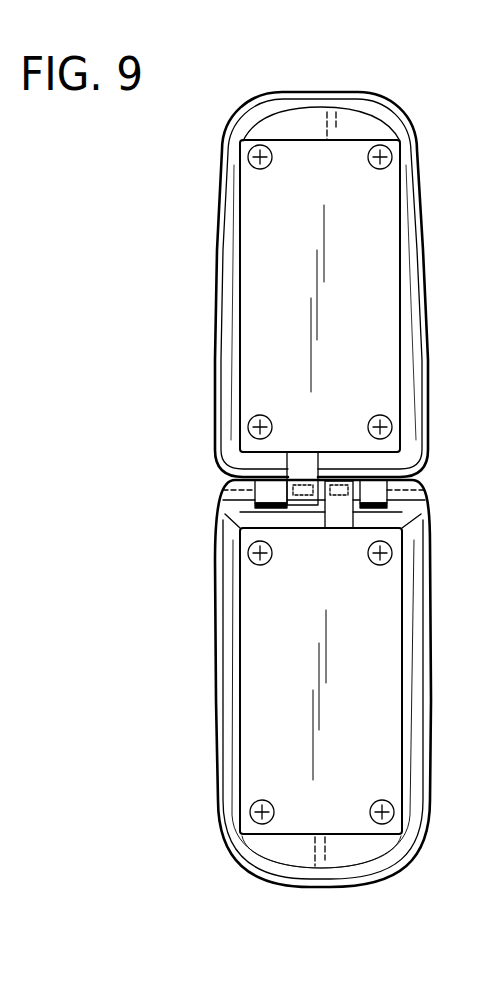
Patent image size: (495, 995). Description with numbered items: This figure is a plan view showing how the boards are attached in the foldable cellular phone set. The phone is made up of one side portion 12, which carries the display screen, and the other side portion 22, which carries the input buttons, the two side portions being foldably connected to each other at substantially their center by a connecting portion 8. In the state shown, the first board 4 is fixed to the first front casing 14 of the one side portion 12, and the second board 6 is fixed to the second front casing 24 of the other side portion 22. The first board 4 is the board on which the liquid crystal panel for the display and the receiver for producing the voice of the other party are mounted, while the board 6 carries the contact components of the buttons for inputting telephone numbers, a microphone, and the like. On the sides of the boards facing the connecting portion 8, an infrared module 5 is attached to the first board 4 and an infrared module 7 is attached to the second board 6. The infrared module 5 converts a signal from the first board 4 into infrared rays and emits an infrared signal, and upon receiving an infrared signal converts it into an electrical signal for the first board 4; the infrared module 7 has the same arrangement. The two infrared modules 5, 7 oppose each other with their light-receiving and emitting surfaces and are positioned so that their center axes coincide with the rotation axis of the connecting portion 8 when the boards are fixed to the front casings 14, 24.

The first board 4 is at (377, 263).
The infrared module 5 is at (306, 482).
The board 6 is at (382, 678).
The infrared module 7 is at (341, 500).
The connecting portion 8 is at (215, 480).
The one side portion 12 is at (203, 350).
The first front casing 14 is at (367, 130).
The other side portion 22 is at (206, 690).
The second front casing 24 is at (343, 853).